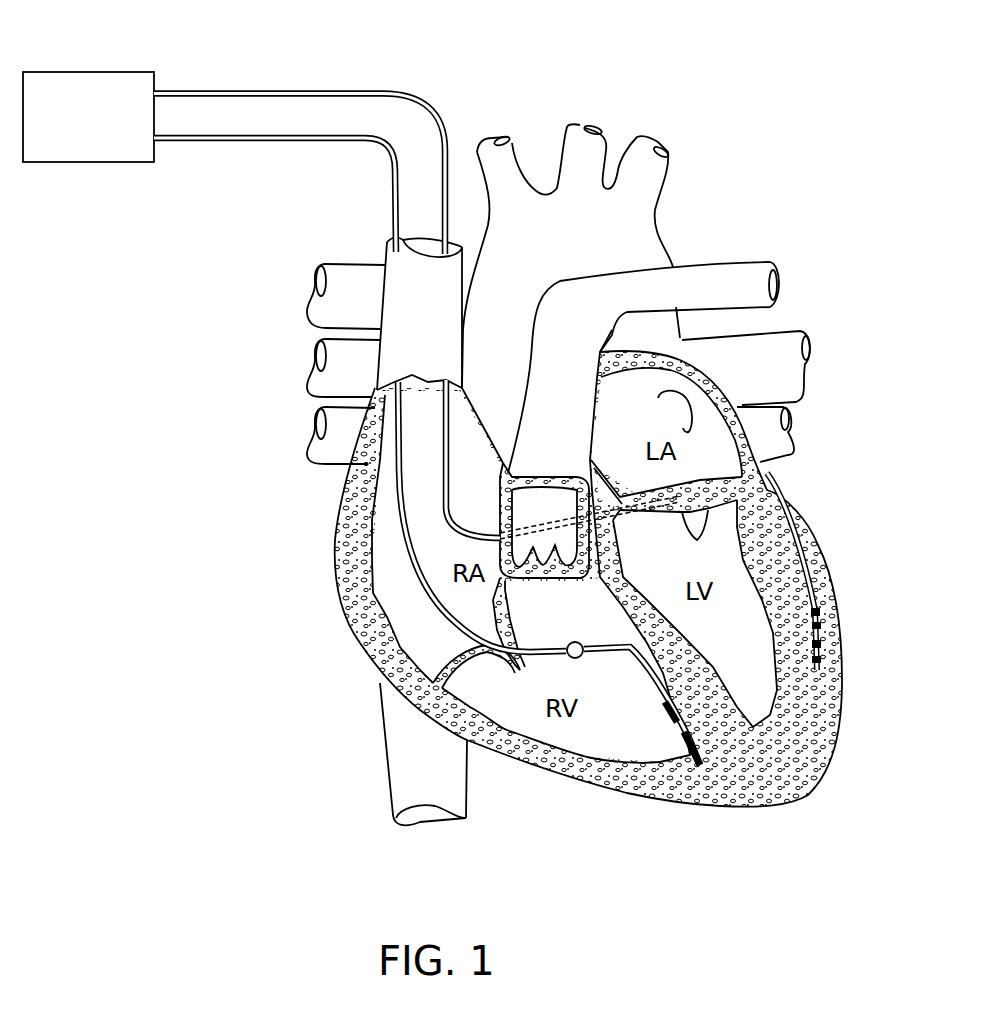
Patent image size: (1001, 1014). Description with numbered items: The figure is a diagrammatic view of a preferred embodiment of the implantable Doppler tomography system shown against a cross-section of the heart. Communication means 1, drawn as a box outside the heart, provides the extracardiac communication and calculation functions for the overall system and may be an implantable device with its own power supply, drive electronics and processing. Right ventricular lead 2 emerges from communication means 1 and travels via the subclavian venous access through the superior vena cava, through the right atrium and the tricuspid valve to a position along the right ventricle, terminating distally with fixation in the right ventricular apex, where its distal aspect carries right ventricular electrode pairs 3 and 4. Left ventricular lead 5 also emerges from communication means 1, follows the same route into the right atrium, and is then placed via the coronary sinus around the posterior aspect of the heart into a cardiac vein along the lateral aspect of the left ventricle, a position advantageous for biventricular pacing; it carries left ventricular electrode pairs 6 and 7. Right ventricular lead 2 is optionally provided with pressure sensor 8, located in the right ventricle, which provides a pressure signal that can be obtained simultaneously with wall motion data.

The communication means 1 is at (98, 133).
The right ventricular lead 2 is at (293, 142).
The right ventricular electrode pair 3 is at (672, 718).
The right ventricular electrode pair 4 is at (683, 752).
The left ventricular lead 5 is at (293, 90).
The left ventricular electrode pair 6 is at (829, 627).
The left ventricular electrode pair 7 is at (830, 663).
The pressure sensor 8 is at (575, 642).